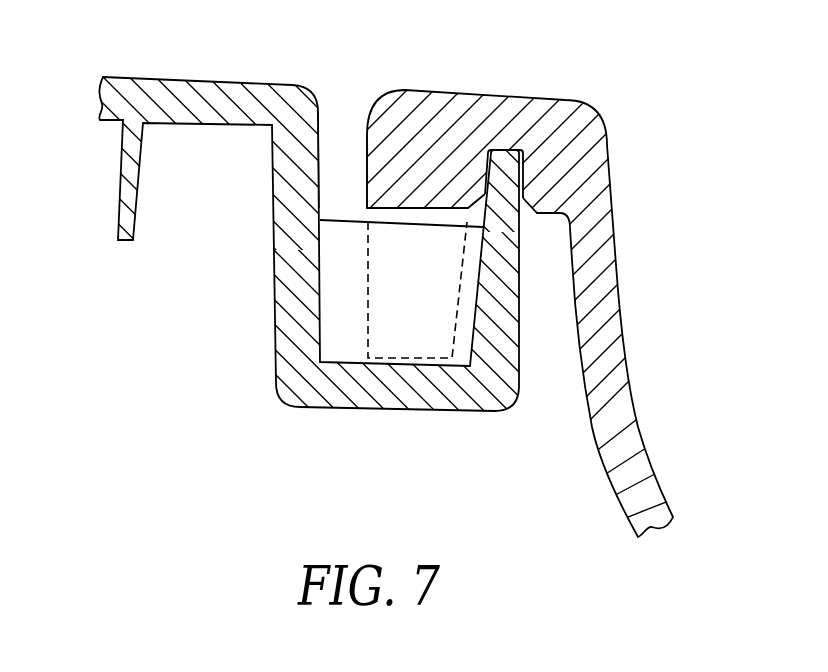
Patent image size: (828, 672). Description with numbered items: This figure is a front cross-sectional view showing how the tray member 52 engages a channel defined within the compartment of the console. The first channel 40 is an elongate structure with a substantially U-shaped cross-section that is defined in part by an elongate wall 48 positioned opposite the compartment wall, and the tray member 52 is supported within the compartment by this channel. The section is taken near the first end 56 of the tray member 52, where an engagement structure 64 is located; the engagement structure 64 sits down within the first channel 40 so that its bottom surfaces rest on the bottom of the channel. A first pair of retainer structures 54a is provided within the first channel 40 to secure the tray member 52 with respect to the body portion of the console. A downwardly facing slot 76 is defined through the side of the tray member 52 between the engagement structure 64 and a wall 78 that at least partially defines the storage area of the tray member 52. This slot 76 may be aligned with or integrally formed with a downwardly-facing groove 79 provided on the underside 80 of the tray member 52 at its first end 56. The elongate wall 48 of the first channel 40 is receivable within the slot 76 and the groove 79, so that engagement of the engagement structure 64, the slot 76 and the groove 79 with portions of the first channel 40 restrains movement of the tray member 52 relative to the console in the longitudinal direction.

The first channel 40 is at (328, 78).
The elongate wall 48 is at (506, 309).
The tray member 52 is at (622, 132).
The first pair of retainer structures 54a is at (332, 220).
The first end 56 is at (366, 137).
The engagement structure 64 is at (368, 305).
The slots 76 is at (510, 132).
The wall 78 is at (626, 348).
The downwardly-facing groove 79 is at (578, 429).
The underside 80 is at (593, 498).